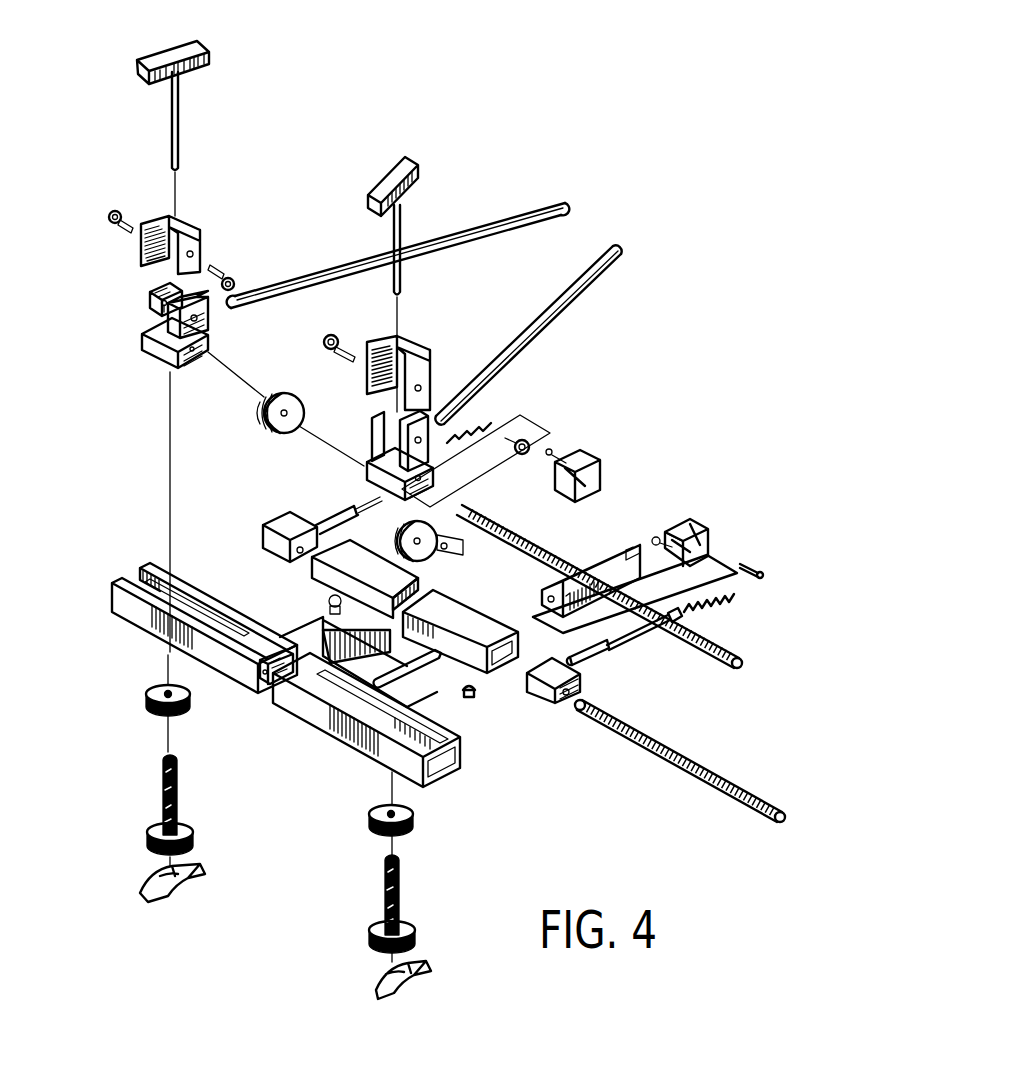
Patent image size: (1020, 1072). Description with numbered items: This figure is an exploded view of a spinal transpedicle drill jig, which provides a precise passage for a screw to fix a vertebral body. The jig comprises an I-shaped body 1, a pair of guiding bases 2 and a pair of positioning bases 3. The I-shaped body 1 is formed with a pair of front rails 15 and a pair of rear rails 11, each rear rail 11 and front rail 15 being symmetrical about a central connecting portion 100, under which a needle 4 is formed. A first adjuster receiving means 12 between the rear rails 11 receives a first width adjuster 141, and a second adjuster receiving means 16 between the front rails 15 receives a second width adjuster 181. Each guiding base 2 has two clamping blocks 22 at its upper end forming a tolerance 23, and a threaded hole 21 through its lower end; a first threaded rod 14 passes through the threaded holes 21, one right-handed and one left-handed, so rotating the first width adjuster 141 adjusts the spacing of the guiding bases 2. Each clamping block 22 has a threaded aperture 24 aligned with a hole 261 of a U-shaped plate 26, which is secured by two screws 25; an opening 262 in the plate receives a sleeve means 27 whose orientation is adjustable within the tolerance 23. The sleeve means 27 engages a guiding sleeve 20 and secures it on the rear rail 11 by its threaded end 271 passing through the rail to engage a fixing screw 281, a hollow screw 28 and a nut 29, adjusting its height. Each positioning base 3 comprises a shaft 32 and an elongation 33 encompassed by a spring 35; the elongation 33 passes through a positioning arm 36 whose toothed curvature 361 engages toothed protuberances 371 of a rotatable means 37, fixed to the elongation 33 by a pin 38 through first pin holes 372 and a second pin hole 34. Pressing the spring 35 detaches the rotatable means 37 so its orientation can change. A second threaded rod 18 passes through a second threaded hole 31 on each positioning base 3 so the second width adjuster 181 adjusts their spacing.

The I-shaped body 1 is at (298, 652).
The central connecting portion 100 is at (373, 623).
The rear rail 11 is at (300, 705).
The first adjuster receiving means 12 is at (266, 688).
The first threaded rod 14 is at (705, 656).
The front rail 15 is at (472, 620).
The second adjuster receiving means 16 is at (463, 583).
The second threaded rod 18 is at (647, 754).
The second width adjuster 181 is at (386, 544).
The guiding base 2 is at (180, 462).
The guiding sleeve 20 is at (472, 226).
The threaded hole 21 is at (176, 372).
The clamping block 22 is at (150, 296).
The tolerance 23 is at (148, 314).
The threaded aperture 24 is at (258, 333).
The screw 25 is at (106, 221).
The U-shaped plate 26 is at (168, 216).
The hole 261 is at (270, 255).
The opening 262 is at (245, 216).
The sleeve means 27 is at (180, 46).
The threaded end 271 is at (179, 108).
The hollow screw 28 is at (162, 791).
The fixing screw 281 is at (146, 693).
The nut 29 is at (142, 890).
The positioning base 3 is at (560, 708).
The second threaded hole 31 is at (565, 707).
The shaft 32 is at (600, 664).
The elongation 33 is at (654, 658).
The second pin hole 34 is at (684, 620).
The spring 35 is at (728, 590).
The positioning arm 36 is at (608, 556).
The toothed curvature 361 is at (648, 556).
The rotatable means 37 is at (709, 507).
The toothed protuberance 371 is at (672, 532).
The first pin hole 372 is at (736, 498).
The pin 38 is at (753, 563).
The needle 4 is at (433, 670).
The first width adjuster 141 is at (283, 392).